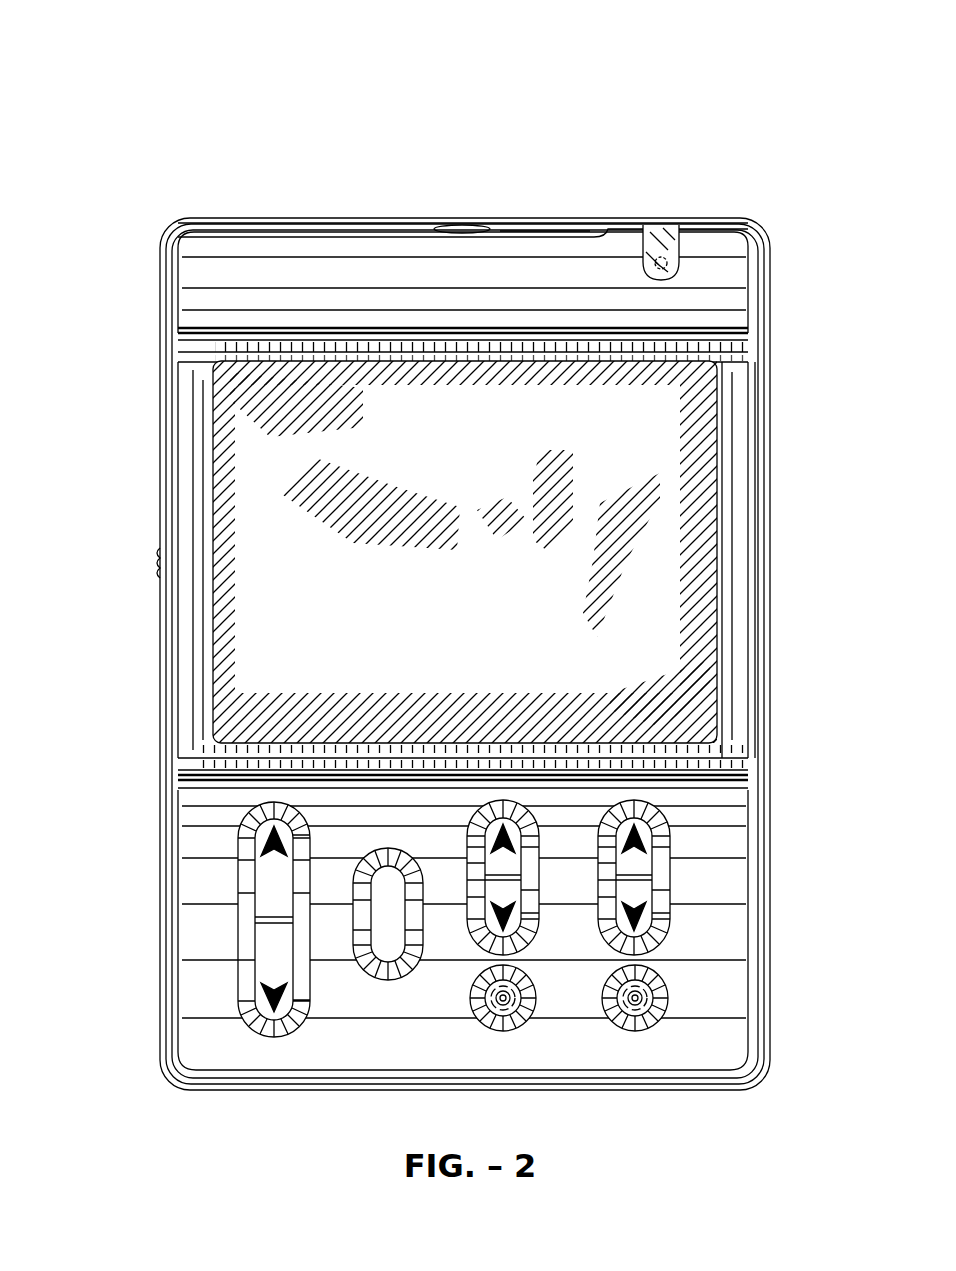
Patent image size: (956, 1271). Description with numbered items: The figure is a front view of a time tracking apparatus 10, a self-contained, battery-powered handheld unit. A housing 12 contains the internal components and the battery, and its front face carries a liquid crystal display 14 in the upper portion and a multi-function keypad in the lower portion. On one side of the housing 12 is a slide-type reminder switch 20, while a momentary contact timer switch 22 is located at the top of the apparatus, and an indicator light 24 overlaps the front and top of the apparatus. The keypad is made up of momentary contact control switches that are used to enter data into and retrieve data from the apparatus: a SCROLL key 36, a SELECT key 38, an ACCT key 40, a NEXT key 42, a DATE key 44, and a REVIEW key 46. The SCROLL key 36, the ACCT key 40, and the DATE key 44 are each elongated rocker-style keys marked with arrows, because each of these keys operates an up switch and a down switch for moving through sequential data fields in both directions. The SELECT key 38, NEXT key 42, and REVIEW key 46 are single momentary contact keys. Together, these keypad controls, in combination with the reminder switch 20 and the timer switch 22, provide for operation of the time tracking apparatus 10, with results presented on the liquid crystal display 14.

The time tracking apparatus 10 is at (228, 56).
The housing 12 is at (770, 568).
The liquid crystal display 14 is at (240, 478).
The slide-type reminder switch 20 is at (160, 562).
The momentary contact timer switch 22 is at (458, 225).
The indicator light 24 is at (660, 240).
The SCROLL key 36 is at (264, 893).
The SELECT key 38 is at (388, 963).
The ACCT key 40 is at (492, 836).
The NEXT key 42 is at (503, 998).
The DATE key 44 is at (634, 860).
The REVIEW key 46 is at (650, 999).